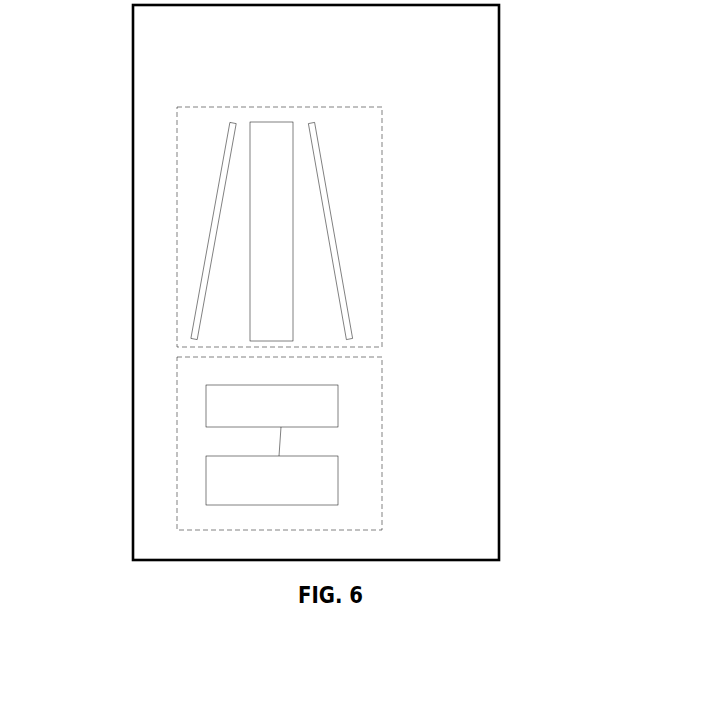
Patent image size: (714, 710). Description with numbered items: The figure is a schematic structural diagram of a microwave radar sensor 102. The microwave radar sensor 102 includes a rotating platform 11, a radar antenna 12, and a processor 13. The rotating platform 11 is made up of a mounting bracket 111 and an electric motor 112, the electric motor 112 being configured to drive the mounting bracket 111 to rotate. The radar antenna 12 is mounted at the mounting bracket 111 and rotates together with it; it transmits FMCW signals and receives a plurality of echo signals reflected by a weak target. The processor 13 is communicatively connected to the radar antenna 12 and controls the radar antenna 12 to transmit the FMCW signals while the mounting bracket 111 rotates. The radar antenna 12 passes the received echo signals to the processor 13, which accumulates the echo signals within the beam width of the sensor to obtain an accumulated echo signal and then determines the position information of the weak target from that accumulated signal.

The microwave radar sensor 102 is at (499, 227).
The rotating platform 11 is at (177, 400).
The mounting bracket 111 is at (338, 473).
The electric motor 112 is at (338, 405).
The radar antenna 12 is at (218, 178).
The processor 13 is at (265, 122).